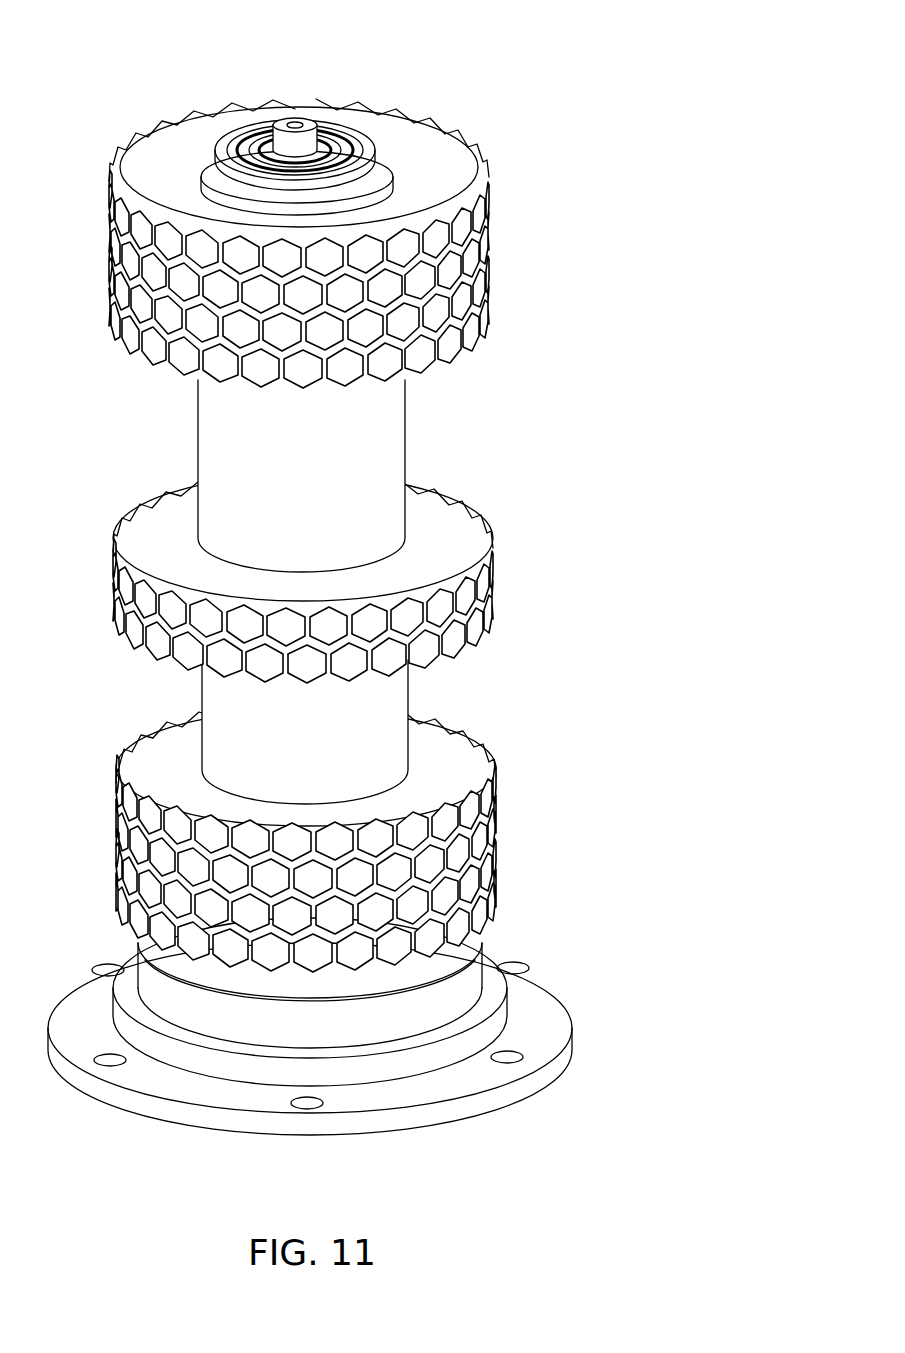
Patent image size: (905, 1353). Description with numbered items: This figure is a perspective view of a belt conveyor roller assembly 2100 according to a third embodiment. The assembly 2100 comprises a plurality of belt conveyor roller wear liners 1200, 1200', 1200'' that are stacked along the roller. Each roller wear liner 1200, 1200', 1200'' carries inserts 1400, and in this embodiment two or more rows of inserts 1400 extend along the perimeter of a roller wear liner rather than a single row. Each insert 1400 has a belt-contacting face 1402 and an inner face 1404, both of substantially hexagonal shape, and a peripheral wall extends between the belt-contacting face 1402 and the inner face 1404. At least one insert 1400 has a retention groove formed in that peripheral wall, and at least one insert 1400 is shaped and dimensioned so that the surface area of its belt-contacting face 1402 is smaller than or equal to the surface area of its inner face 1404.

The belt conveyor roller assembly 2100 is at (322, 567).
The belt conveyor roller wear liner 1200 is at (343, 243).
The belt conveyor roller wear liner 1200' is at (337, 570).
The belt conveyor roller wear liner 1200'' is at (290, 822).
The insert 1400 is at (354, 611).
The belt-contacting face 1402 is at (438, 598).
The inner face 1404 is at (407, 572).